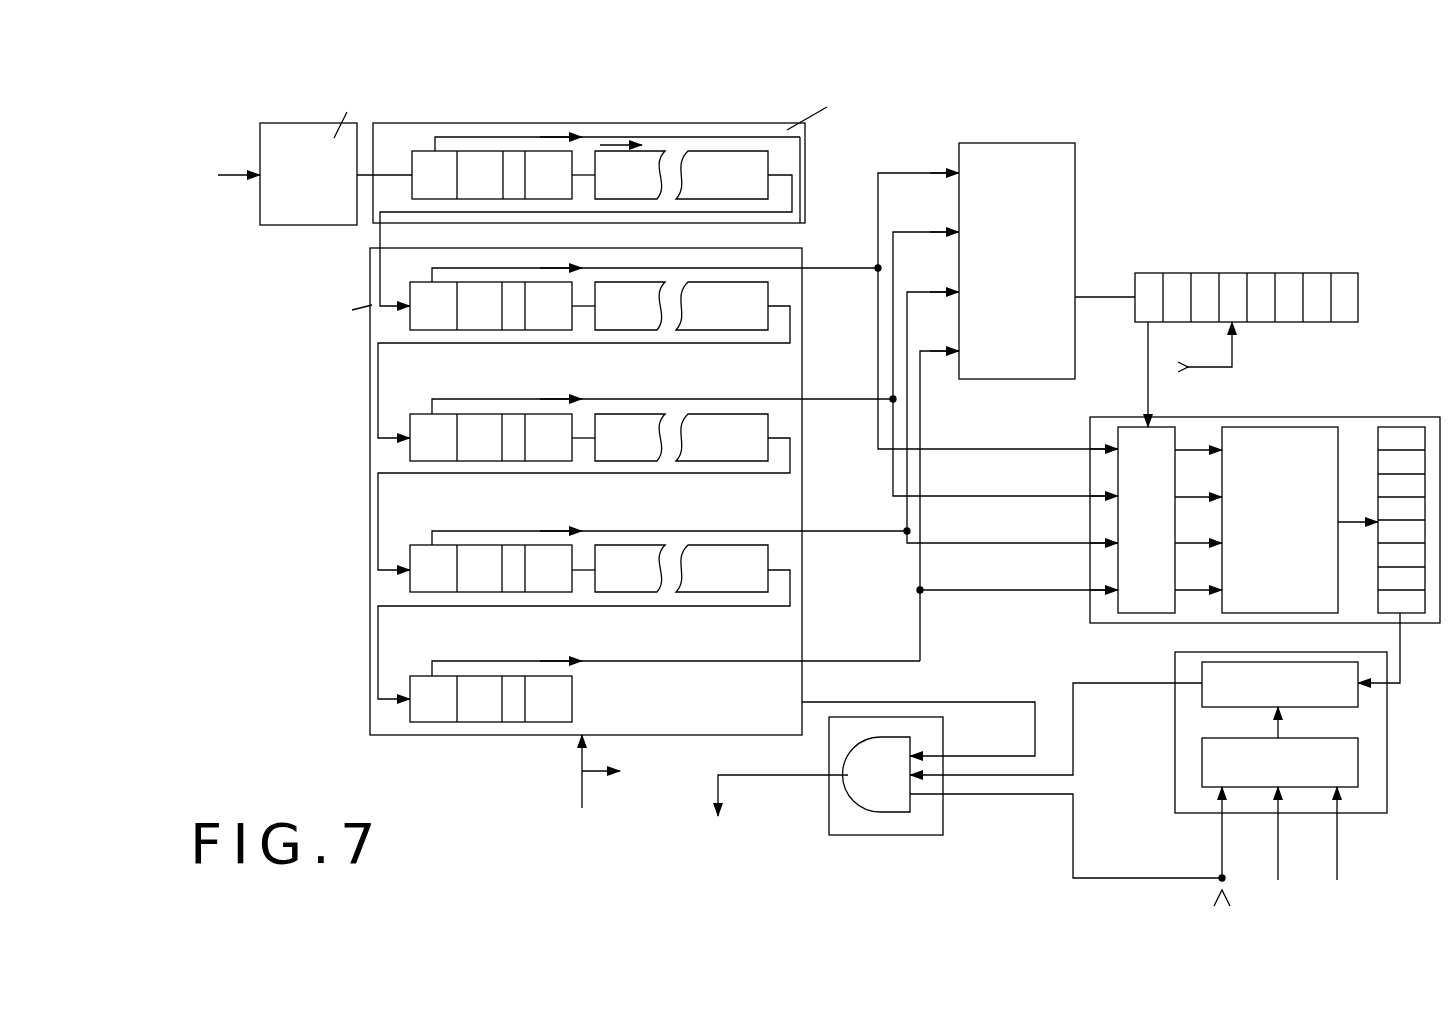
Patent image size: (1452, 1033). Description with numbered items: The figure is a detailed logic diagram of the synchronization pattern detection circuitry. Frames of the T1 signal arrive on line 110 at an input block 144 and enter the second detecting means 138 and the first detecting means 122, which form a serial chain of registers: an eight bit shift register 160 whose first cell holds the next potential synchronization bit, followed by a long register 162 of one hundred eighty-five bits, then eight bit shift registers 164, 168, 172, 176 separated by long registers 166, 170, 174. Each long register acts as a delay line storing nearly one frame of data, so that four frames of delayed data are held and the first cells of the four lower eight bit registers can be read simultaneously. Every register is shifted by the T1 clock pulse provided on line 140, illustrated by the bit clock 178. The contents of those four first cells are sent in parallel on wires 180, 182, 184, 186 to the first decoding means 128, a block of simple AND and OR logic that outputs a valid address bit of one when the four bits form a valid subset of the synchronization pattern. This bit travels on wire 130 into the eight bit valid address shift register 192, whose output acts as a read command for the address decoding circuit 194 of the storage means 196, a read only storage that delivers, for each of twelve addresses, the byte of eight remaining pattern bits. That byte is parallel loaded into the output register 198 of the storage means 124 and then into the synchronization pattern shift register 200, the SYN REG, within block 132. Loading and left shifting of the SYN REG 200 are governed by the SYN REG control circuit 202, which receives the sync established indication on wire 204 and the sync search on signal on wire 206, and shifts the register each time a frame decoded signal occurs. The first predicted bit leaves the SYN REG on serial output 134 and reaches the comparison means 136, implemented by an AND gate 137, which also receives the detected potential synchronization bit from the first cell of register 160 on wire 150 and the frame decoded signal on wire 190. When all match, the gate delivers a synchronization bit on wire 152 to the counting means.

The line 110 is at (380, 172).
The first detecting means 122 is at (370, 318).
The storage means 124 is at (1438, 624).
The first decoding means 128 is at (1013, 142).
The wire 130 is at (1094, 294).
The synchronization register block 132 is at (1388, 737).
The serial output 134 is at (1073, 718).
The comparison means 136 is at (885, 840).
The AND gate 137 is at (910, 812).
The second detecting means 138 is at (757, 125).
The line 140 is at (580, 784).
The input block 144 is at (302, 228).
The wire 150 is at (923, 698).
The wire 152 is at (755, 770).
The shift register 160 is at (487, 151).
The shift register 162 is at (697, 151).
The shift register 164 is at (483, 330).
The shift register 166 is at (620, 330).
The shift register 168 is at (483, 461).
The shift register 170 is at (622, 461).
The shift register 172 is at (473, 592).
The shift register 174 is at (620, 592).
The shift register 176 is at (487, 737).
The T1 bit clock 178 is at (597, 768).
The wire 180 is at (879, 218).
The wire 182 is at (894, 273).
The wire 184 is at (908, 350).
The wire 186 is at (921, 412).
The wire 190 is at (1073, 858).
The valid address shift register 192 is at (1302, 273).
The address decoding circuit 194 is at (1119, 417).
The storage means 196 is at (1318, 427).
The output register 198 is at (1417, 427).
The synchronization pattern shift register 200 is at (1222, 662).
The SYN REG control circuit 202 is at (1305, 738).
The wire 204 is at (1278, 858).
The wire 206 is at (1337, 858).